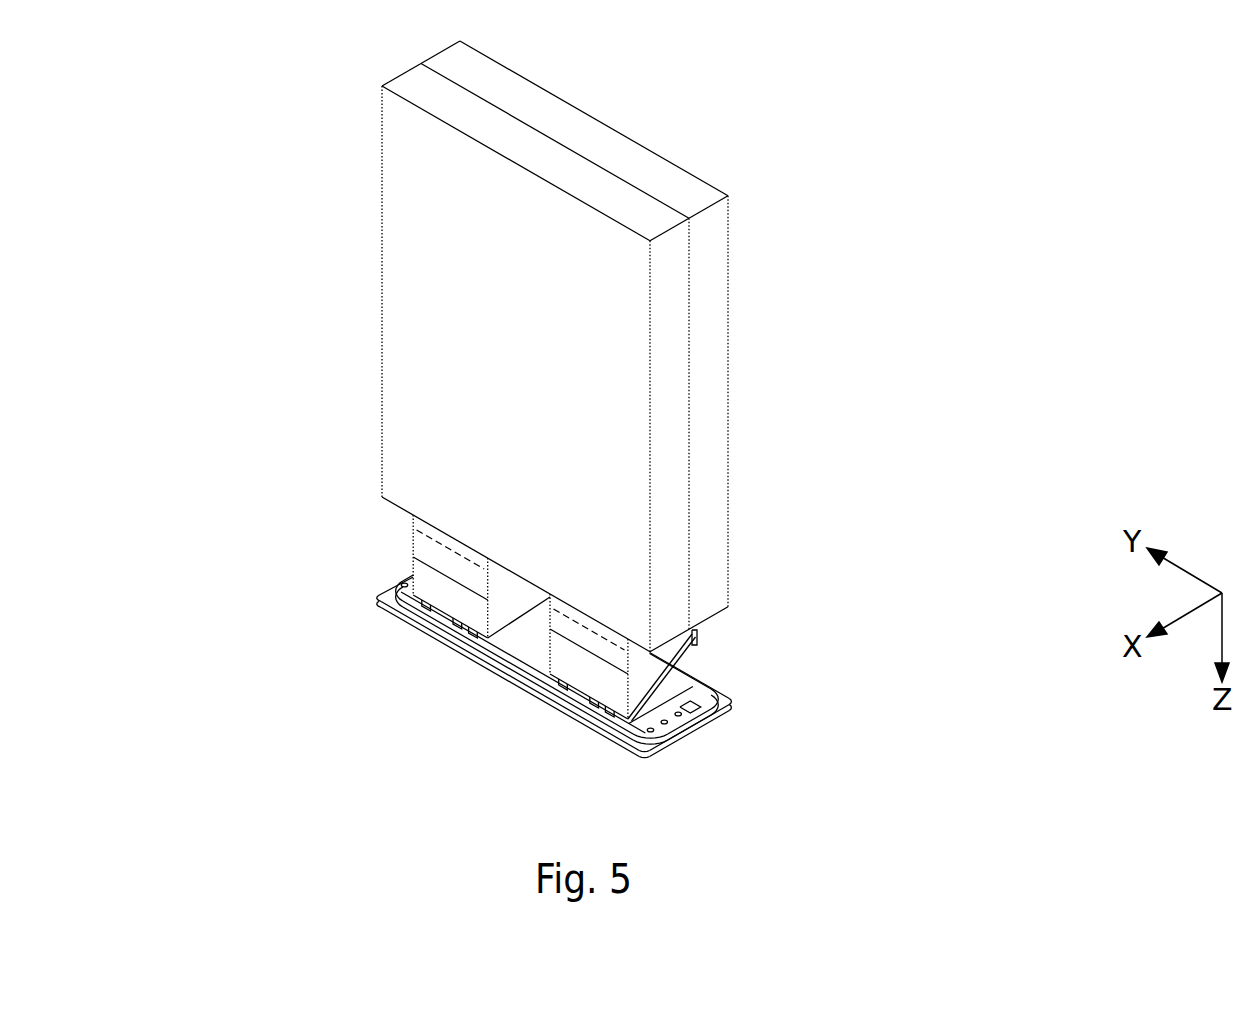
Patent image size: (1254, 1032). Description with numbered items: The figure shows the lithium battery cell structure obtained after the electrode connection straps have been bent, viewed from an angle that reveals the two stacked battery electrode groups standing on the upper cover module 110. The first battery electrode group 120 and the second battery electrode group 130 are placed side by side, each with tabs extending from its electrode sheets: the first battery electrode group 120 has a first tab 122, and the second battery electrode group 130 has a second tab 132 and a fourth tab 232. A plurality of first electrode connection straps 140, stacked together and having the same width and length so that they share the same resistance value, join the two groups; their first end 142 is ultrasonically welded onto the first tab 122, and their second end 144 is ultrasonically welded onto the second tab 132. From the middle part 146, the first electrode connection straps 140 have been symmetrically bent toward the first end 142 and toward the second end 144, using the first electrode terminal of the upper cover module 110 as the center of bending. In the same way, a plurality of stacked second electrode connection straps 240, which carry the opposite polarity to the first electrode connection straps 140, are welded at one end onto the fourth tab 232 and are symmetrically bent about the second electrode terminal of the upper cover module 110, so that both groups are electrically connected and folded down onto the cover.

The upper cover module 110 is at (623, 732).
The first battery electrode group 120 is at (568, 346).
The first tab 122 is at (698, 633).
The second battery electrode group 130 is at (413, 291).
The second tab 132 is at (566, 631).
The first electrode connection straps 140 is at (695, 673).
The first end 142 is at (690, 652).
The second end 144 is at (581, 674).
The middle part 146 is at (665, 688).
The fourth tab 232 is at (423, 551).
The second electrode connection straps 240 is at (442, 587).